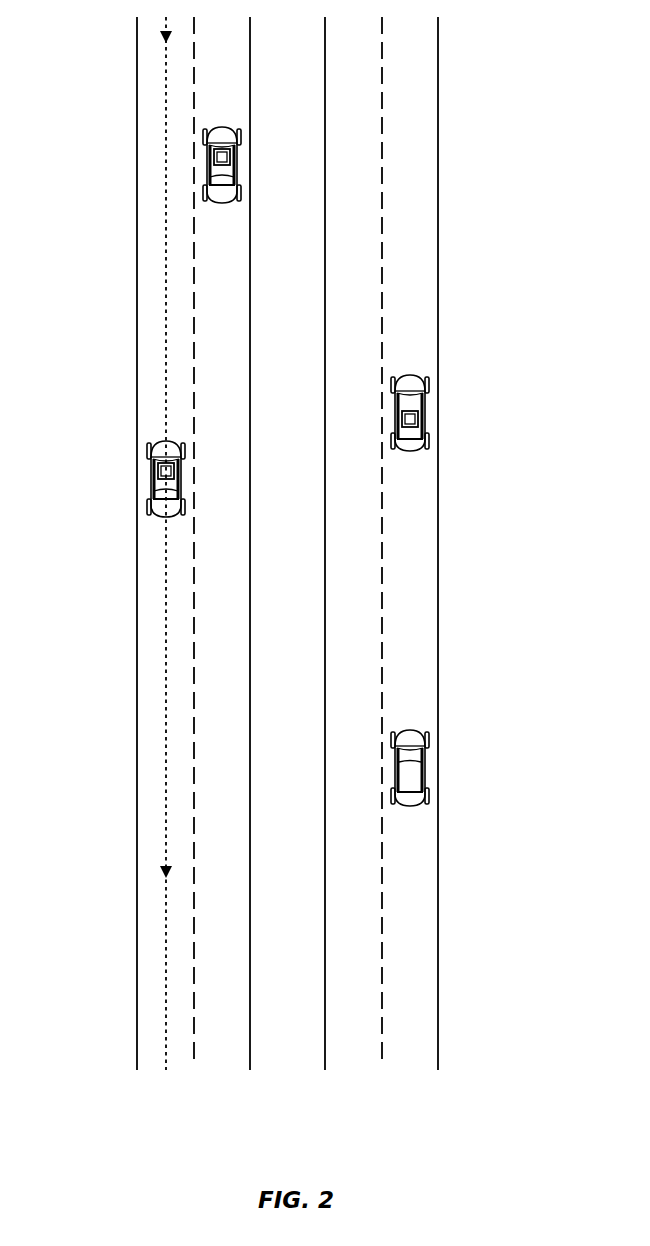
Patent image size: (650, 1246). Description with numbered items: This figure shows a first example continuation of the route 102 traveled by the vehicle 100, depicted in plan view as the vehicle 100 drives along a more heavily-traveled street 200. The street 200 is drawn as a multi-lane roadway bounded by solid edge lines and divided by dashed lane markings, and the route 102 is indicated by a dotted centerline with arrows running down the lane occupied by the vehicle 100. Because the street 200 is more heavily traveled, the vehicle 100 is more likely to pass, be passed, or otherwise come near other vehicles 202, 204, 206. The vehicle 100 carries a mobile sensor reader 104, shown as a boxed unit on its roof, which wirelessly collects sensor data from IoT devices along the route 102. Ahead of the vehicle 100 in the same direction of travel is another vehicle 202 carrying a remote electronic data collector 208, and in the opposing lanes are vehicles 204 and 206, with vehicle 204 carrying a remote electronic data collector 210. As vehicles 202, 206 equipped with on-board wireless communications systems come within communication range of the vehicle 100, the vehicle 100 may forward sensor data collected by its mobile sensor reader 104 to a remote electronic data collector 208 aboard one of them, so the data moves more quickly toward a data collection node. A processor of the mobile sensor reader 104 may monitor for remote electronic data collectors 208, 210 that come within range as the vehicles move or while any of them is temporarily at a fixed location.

The street 200 is at (137, 25).
The route 102 is at (165, 70).
The vehicle 100 is at (119, 479).
The mobile sensor reader 104 is at (158, 470).
The other vehicle 202 is at (154, 165).
The remote electronic data collector 208 is at (214, 156).
The other vehicle 204 is at (457, 412).
The remote electronic data collector 210 is at (418, 421).
The other vehicle 206 is at (429, 746).